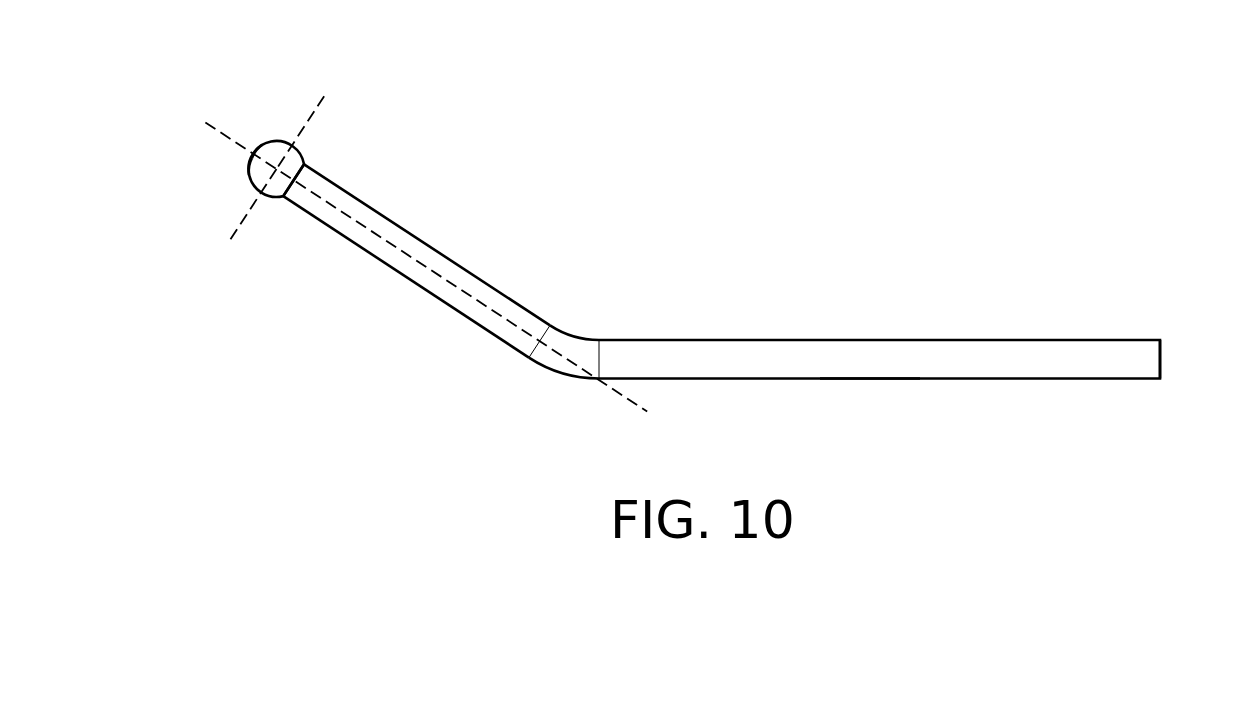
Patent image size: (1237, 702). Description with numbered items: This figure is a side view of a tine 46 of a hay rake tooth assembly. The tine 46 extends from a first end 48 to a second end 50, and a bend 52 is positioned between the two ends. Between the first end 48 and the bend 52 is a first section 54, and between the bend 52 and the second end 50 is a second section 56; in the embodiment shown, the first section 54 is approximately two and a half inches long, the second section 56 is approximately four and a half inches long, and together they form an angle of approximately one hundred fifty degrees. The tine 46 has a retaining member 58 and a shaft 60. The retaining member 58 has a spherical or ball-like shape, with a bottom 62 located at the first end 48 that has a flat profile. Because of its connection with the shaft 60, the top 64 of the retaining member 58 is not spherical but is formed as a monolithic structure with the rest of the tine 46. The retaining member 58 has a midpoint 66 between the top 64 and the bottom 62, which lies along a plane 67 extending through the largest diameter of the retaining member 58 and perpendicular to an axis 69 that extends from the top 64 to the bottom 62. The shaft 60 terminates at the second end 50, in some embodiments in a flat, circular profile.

The tine 46 is at (701, 253).
The first end 48 is at (261, 141).
The second end 50 is at (1161, 360).
The bend 52 is at (587, 323).
The first section 54 is at (433, 247).
The second section 56 is at (960, 339).
The retaining member 58 is at (258, 177).
The shaft 60 is at (867, 368).
The bottom 62 is at (250, 153).
The top 64 is at (283, 192).
The midpoint 66 is at (295, 142).
The plane 67 is at (240, 224).
The axis 69 is at (458, 292).